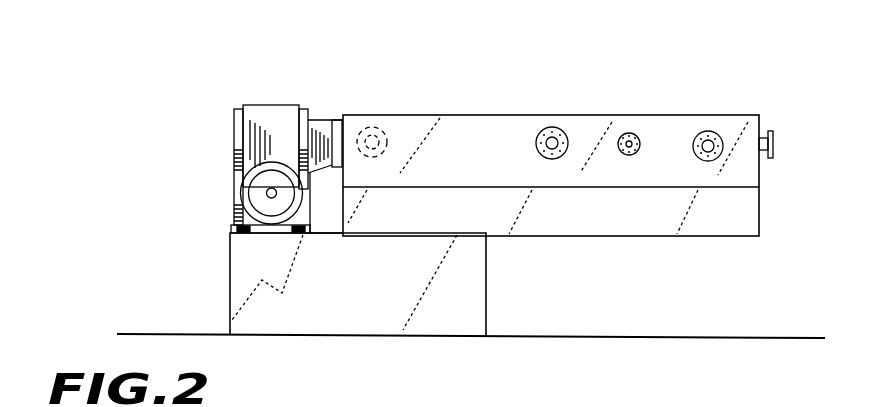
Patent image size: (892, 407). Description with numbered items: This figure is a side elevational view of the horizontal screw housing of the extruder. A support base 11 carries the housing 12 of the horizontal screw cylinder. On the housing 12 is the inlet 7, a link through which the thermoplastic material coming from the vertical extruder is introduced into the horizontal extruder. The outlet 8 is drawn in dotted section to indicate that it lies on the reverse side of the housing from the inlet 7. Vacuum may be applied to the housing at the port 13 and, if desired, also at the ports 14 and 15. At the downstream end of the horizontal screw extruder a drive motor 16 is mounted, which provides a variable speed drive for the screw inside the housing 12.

The inlet 7 is at (707, 145).
The outlet 8 is at (363, 140).
The support base 11 is at (229, 258).
The housing 12 is at (761, 226).
The port 13 is at (773, 138).
The port 14 is at (629, 142).
The port 15 is at (550, 140).
The drive motor 16 is at (273, 117).